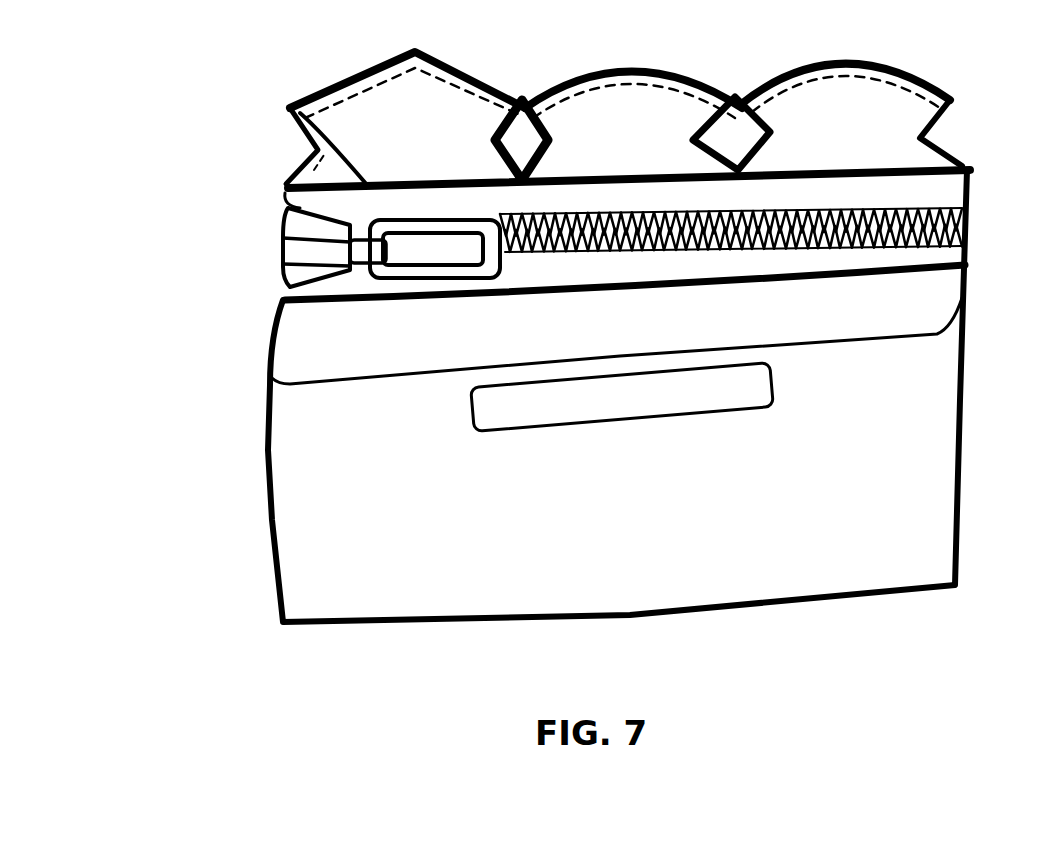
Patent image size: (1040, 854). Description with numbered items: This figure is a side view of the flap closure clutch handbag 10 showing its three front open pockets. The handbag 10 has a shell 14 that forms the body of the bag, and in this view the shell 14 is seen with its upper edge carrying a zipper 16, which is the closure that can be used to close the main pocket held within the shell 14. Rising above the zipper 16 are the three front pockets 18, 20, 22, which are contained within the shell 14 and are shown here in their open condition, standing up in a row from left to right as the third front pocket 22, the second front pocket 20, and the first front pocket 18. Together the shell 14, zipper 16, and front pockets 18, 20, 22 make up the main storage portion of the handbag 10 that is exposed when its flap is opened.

The flap closure clutch handbag 10 is at (584, 337).
The shell 14 is at (957, 470).
The zipper 16 is at (283, 257).
The front pocket 18 is at (851, 115).
The front pocket 20 is at (633, 111).
The front pocket 22 is at (405, 119).